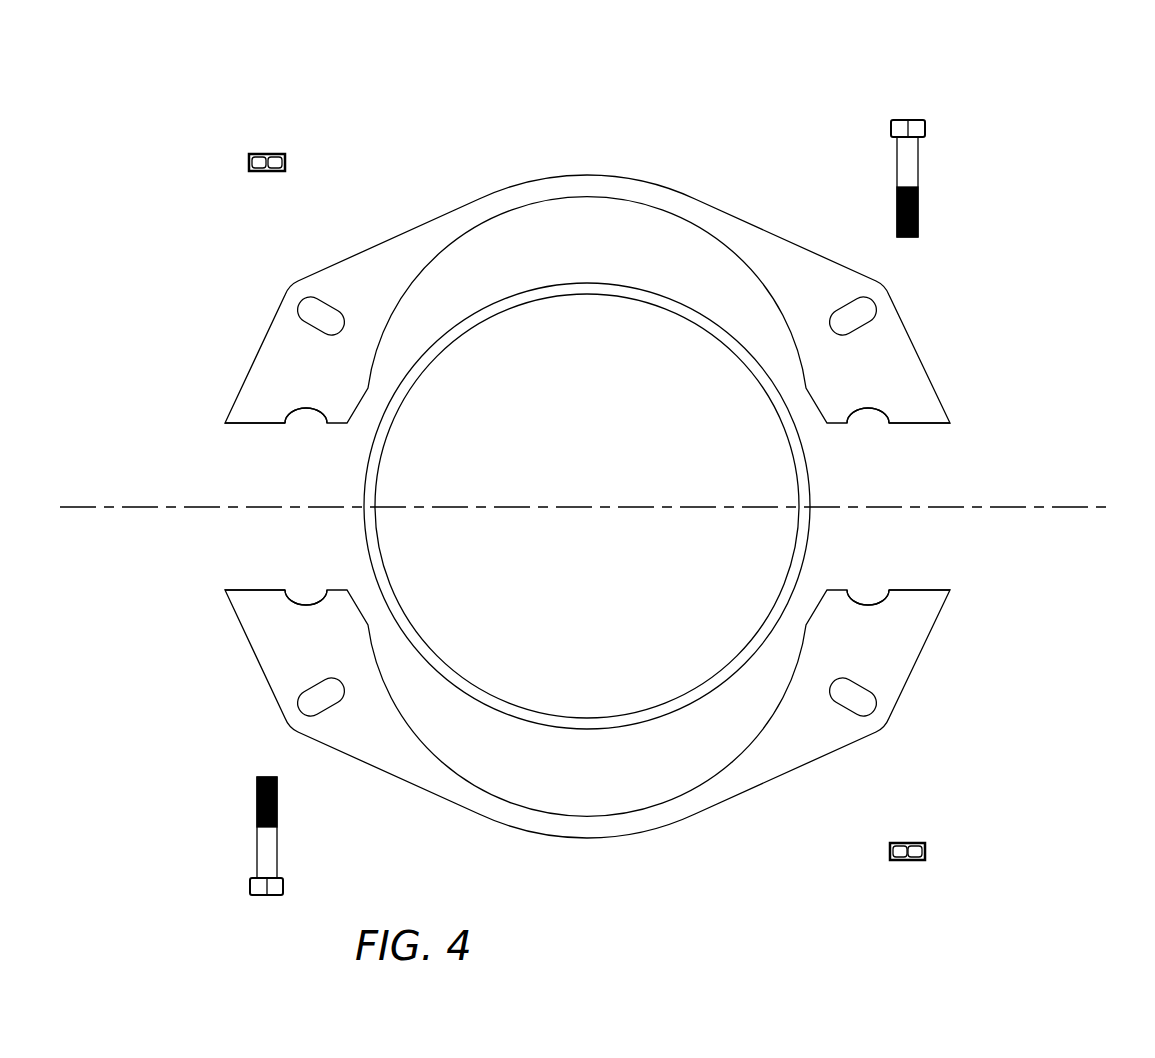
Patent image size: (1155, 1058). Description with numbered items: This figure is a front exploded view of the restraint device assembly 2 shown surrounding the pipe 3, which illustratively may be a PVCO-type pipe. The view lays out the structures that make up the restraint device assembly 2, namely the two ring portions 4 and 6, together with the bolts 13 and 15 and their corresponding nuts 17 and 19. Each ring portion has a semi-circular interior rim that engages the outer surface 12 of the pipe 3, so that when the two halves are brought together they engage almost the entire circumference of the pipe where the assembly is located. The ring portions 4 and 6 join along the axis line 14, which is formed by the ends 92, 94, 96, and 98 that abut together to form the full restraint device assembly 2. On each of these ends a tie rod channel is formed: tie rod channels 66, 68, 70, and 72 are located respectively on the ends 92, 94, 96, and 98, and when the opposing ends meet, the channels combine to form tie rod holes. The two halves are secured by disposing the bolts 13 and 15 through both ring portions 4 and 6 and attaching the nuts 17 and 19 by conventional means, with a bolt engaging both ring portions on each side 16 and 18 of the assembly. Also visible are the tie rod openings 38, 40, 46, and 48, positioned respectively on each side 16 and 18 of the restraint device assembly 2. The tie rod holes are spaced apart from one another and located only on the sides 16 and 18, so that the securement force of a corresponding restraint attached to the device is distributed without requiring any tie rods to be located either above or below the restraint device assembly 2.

The restraint device assembly 2 is at (726, 117).
The pipe 3 is at (481, 300).
The ring portion 4 is at (587, 165).
The ring portion 6 is at (587, 848).
The outer surface 12 is at (588, 283).
The bolt 13 is at (257, 852).
The axis line 14 is at (1068, 507).
The bolt 15 is at (918, 162).
The side 16 is at (156, 476).
The nut 17 is at (261, 154).
The side 18 is at (1020, 476).
The nut 19 is at (914, 860).
The tie rod opening 38 is at (295, 313).
The tie rod opening 40 is at (879, 313).
The tie rod opening 46 is at (295, 700).
The tie rod opening 48 is at (879, 700).
The tie rod channel 66 is at (307, 408).
The tie rod channel 68 is at (307, 605).
The tie rod channel 70 is at (867, 408).
The tie rod channel 72 is at (867, 605).
The end 92 is at (253, 424).
The end 94 is at (253, 589).
The end 96 is at (920, 424).
The end 98 is at (920, 589).